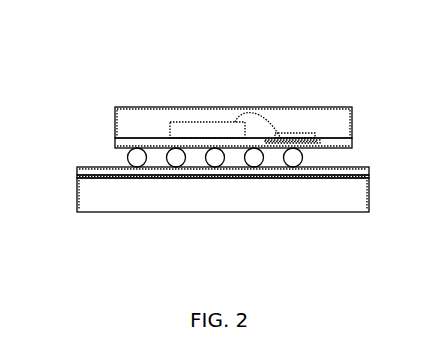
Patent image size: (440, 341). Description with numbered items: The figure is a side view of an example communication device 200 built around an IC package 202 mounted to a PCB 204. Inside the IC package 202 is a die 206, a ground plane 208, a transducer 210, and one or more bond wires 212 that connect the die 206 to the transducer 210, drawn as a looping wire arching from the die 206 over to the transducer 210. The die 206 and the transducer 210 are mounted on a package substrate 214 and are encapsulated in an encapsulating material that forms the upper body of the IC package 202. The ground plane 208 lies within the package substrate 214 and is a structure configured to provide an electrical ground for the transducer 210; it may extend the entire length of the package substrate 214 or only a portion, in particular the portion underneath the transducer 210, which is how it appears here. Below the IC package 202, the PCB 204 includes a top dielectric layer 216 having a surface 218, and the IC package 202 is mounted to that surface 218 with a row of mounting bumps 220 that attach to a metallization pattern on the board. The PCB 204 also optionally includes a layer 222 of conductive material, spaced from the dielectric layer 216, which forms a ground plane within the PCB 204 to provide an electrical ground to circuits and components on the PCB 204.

The communication device 200 is at (85, 57).
The IC package 202 is at (113, 118).
The PCB 204 is at (73, 163).
The die 206 is at (175, 120).
The ground plane 208 is at (325, 140).
The transducer 210 is at (298, 133).
The bond wires 212 is at (248, 114).
The package substrate 214 is at (355, 143).
The top dielectric layer 216 is at (371, 167).
The surface 218 is at (103, 163).
The mounting bumps 220 is at (311, 158).
The layer 222 is at (75, 176).